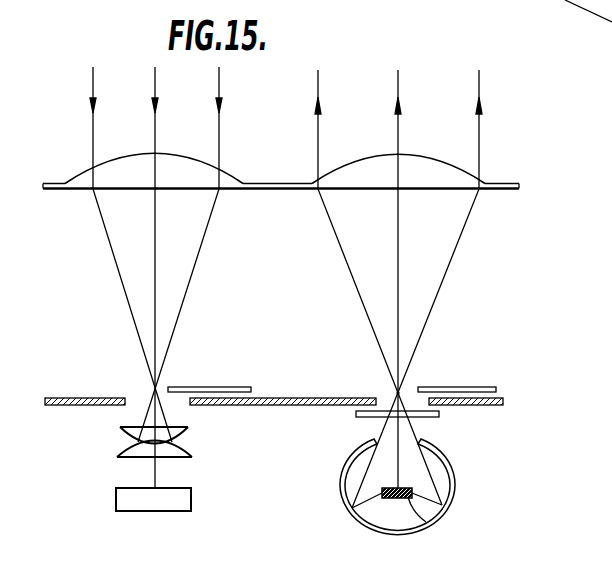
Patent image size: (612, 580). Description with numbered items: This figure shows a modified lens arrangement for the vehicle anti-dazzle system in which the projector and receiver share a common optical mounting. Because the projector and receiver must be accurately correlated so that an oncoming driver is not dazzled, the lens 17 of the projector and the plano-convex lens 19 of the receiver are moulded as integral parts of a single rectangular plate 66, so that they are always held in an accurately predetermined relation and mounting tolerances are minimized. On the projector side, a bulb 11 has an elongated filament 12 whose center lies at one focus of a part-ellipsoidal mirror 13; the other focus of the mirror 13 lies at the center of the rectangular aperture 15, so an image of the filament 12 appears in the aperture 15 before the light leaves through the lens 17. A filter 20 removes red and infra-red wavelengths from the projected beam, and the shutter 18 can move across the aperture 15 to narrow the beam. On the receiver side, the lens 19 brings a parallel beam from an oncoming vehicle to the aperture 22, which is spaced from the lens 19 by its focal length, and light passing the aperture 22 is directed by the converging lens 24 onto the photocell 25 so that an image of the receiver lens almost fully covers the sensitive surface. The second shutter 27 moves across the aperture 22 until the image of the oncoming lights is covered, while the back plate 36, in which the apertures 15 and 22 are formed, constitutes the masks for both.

The bulb 11 is at (344, 463).
The filament 12 is at (426, 522).
The part-ellipsoidal mirror 13 is at (353, 508).
The aperture 15 is at (405, 395).
The lens 17 is at (436, 165).
The shutter 18 is at (503, 391).
The plano-convex lens 19 is at (138, 165).
The filter 20 is at (439, 417).
The aperture 22 is at (135, 398).
The converging lens 24 is at (168, 440).
The photocell 25 is at (125, 500).
The second shutter 27 is at (203, 387).
The back plate 36 is at (333, 398).
The rectangular plate 66 is at (510, 195).